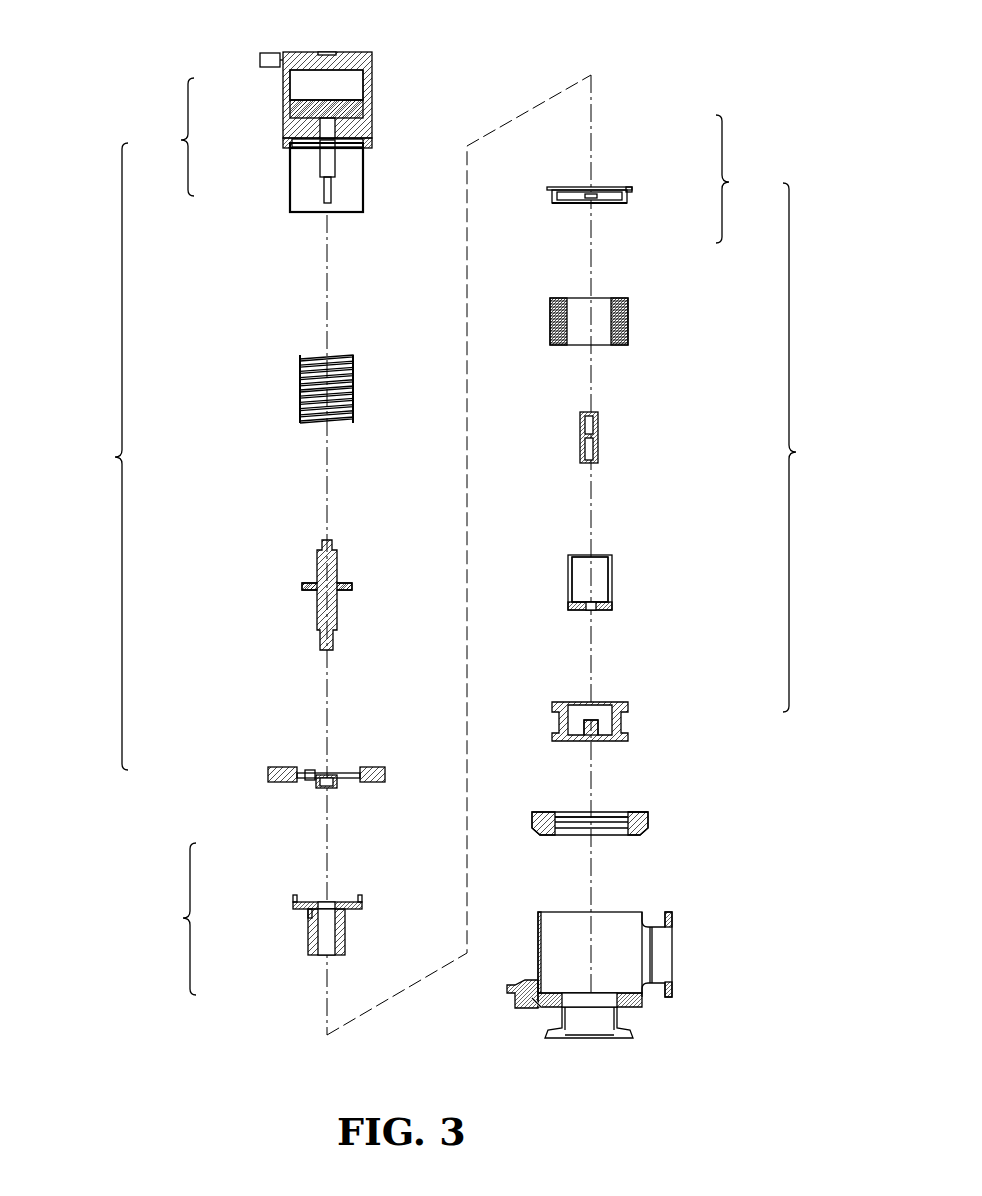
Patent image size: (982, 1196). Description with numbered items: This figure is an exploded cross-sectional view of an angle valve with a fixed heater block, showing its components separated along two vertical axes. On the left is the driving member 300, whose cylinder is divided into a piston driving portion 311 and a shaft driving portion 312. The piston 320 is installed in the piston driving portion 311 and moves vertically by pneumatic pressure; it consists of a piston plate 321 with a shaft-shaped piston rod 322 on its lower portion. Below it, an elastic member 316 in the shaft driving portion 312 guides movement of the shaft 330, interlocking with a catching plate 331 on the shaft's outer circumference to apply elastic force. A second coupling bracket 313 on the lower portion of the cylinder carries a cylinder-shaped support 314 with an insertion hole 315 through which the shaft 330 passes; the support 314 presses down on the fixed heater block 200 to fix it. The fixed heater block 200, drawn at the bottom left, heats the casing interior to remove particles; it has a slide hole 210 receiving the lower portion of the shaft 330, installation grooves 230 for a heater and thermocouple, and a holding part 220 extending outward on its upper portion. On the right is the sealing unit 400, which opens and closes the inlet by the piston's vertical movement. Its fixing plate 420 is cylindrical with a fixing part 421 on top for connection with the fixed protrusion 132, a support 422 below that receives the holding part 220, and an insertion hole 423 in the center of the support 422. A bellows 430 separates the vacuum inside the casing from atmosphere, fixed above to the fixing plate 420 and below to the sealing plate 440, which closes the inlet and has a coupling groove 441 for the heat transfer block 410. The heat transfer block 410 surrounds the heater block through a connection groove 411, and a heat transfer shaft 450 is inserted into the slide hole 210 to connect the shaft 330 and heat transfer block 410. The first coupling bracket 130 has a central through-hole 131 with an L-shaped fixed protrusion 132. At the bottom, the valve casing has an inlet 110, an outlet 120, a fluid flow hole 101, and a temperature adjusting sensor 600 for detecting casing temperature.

The driving member 300 is at (112, 442).
The piston 320 is at (178, 154).
The piston driving portion 311 is at (290, 74).
The piston plate 321 is at (298, 110).
The piston rod 322 is at (290, 149).
The shaft driving portion 312 is at (290, 192).
The elastic member 316 is at (300, 380).
The shaft 330 is at (322, 568).
The catching plate 331 is at (302, 587).
The insertion hole 315 is at (327, 780).
The second coupling bracket 313 is at (285, 772).
The support 314 is at (313, 787).
The fixed heater block 200 is at (180, 932).
The slide hole 210 is at (305, 903).
The installation grooves 230 is at (295, 903).
The holding part 220 is at (340, 913).
The fixing plate 420 is at (775, 192).
The insertion hole 423 is at (592, 197).
The fixing part 421 is at (632, 187).
The support 422 is at (630, 205).
The bellows 430 is at (628, 328).
The heat transfer shaft 450 is at (598, 435).
The heat transfer block 410 is at (612, 578).
The connection groove 411 is at (590, 570).
The sealing plate 440 is at (621, 715).
The coupling groove 441 is at (593, 713).
The sealing unit 400 is at (843, 463).
The first coupling bracket 130 is at (648, 818).
The through-hole 131 is at (588, 822).
The fixed protrusion 132 is at (630, 814).
The fluid flow hole 101 is at (590, 955).
The outlet 120 is at (672, 915).
The inlet 110 is at (635, 1033).
The temperature adjusting sensor 600 is at (512, 993).